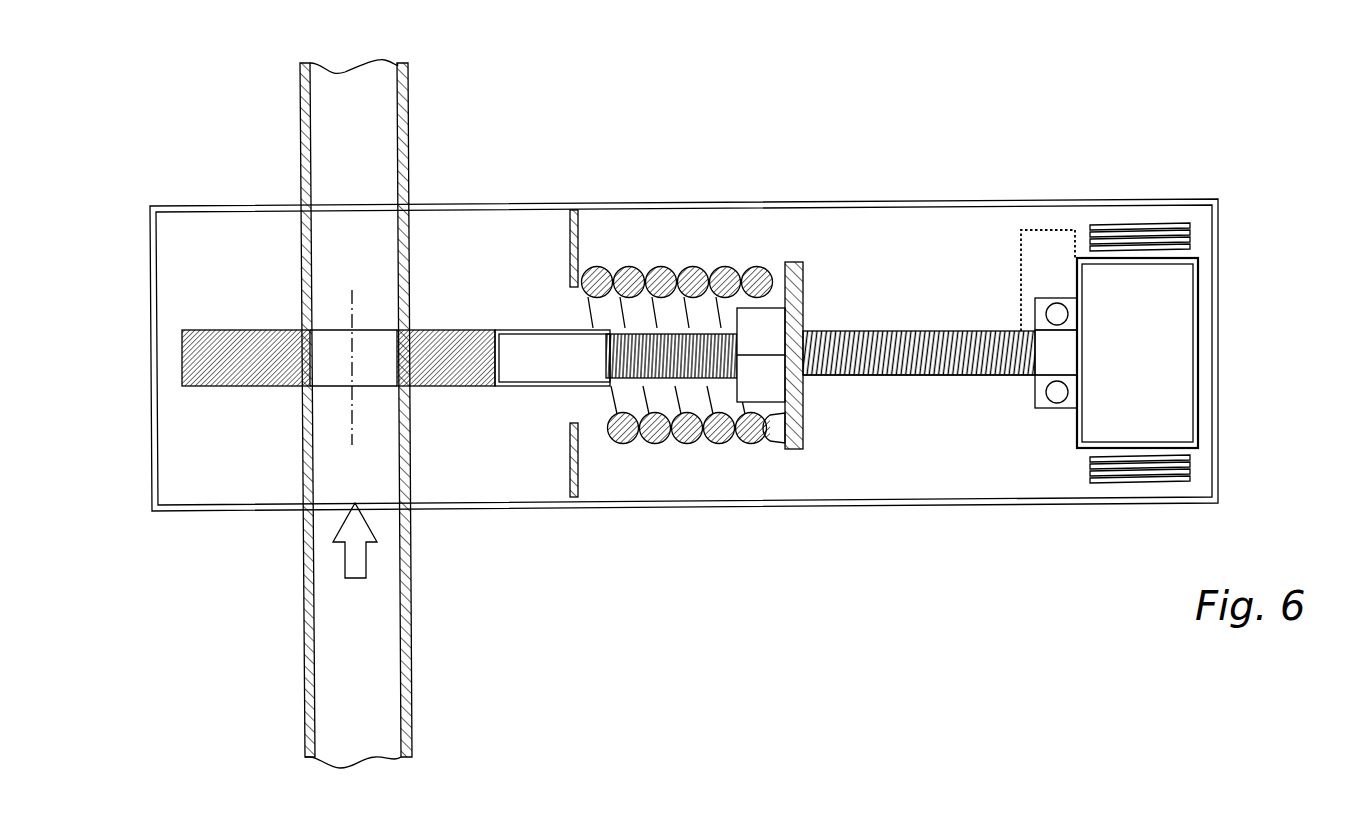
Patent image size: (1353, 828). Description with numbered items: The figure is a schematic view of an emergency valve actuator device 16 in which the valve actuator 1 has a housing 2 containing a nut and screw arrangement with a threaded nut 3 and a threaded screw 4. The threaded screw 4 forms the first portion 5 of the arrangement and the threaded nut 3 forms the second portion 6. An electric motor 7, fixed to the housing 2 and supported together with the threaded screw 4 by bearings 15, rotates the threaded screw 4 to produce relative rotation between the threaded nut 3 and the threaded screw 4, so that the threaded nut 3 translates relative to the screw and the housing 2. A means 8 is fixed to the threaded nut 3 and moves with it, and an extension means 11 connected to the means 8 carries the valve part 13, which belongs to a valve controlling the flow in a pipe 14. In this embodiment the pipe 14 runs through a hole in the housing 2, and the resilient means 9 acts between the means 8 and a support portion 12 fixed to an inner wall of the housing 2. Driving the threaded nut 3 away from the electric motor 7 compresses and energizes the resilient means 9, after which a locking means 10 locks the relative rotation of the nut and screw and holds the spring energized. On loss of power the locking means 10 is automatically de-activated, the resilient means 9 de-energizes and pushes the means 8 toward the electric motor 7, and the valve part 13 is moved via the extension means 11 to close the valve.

The valve actuator 1 is at (1222, 145).
The housing 2 is at (672, 203).
The threaded nut 3 is at (762, 345).
The threaded screw 4 is at (935, 333).
The first portion 5 is at (962, 378).
The second portion 6 is at (762, 370).
The electric motor 7 is at (1200, 290).
The means 8 is at (795, 450).
The resilient means 9 is at (600, 266).
The locking means 10 is at (1067, 232).
The extension means 11 is at (505, 386).
The support portion 12 is at (578, 497).
The valve part 13 is at (333, 368).
The pipe 14 is at (410, 175).
The bearings 15 is at (1057, 403).
The valve arrangement 16 is at (817, 100).